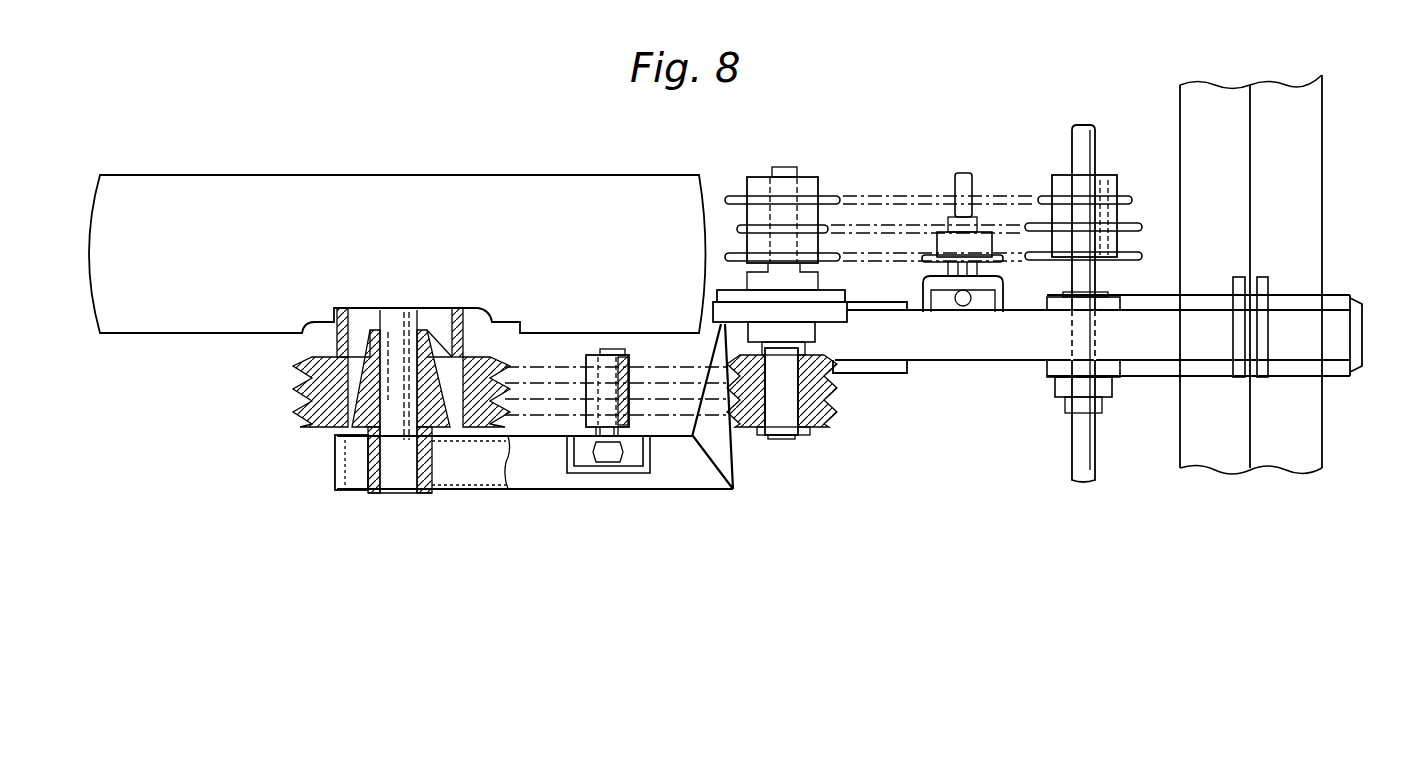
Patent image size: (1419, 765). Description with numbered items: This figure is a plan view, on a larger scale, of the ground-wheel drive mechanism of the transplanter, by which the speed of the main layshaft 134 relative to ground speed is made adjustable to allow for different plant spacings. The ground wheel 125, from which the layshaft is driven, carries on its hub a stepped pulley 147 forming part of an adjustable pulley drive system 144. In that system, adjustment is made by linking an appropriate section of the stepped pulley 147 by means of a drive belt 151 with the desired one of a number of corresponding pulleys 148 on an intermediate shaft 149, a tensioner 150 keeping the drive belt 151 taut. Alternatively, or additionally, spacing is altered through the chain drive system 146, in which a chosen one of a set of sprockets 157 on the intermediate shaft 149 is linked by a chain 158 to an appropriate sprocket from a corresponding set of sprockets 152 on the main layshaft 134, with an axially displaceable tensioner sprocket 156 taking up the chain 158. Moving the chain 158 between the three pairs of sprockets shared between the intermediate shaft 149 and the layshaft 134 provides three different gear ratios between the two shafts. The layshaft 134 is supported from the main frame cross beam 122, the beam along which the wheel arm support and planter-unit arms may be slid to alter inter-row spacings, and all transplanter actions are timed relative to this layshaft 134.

The main frame cross beam 122 is at (1302, 165).
The ground wheel 125 is at (242, 190).
The main layshaft 134 is at (1092, 146).
The adjustable pulley drive system 144 is at (597, 530).
The adjustable chain drive system 146 is at (897, 500).
The stepped pulley 147 is at (338, 433).
The pulleys 148 is at (820, 428).
The intermediate shaft 149 is at (786, 150).
The tensioner 150 is at (633, 418).
The drive belt 151 is at (538, 416).
The sprockets 152 is at (1038, 181).
The tensioner sprocket 156 is at (944, 242).
The sprockets 157 is at (731, 184).
The chain 158 is at (903, 198).